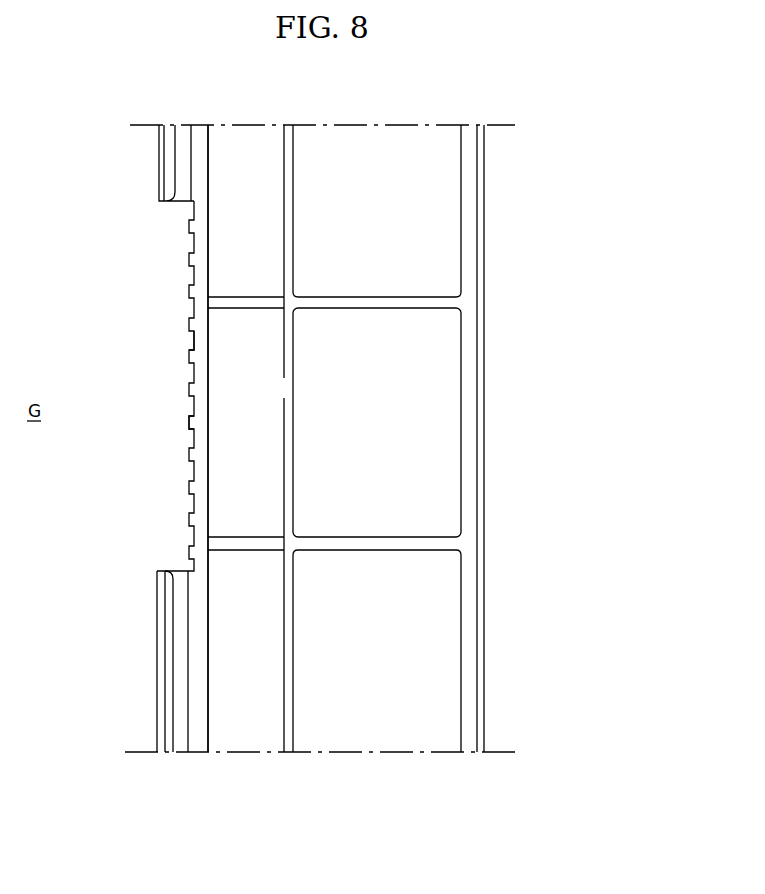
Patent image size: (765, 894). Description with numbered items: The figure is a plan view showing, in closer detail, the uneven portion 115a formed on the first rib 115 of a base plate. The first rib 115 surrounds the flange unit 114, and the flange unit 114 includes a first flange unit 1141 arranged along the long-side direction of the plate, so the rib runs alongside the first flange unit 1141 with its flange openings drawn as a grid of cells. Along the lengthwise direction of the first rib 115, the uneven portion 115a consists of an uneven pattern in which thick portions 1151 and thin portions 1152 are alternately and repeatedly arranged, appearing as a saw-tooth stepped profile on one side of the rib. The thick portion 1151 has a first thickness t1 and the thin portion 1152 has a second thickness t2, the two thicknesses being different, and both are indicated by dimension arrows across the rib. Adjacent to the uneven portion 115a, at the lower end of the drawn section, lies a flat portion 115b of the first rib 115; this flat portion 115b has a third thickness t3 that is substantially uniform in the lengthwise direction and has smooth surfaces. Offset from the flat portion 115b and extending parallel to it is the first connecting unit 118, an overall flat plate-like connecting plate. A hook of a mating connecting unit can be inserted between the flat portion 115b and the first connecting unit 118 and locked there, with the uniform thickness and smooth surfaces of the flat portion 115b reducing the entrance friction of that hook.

The flange unit 114 is at (409, 438).
The first flange unit 1141 is at (443, 419).
The first rib 115 is at (183, 438).
The uneven portion 115a is at (203, 395).
The flat portion 115b is at (202, 667).
The thick portion 1151 is at (194, 352).
The thin portion 1152 is at (200, 433).
The first connecting unit 118 is at (157, 678).
The first thickness t1 is at (216, 353).
The second thickness t2 is at (216, 433).
The third thickness t3 is at (150, 722).